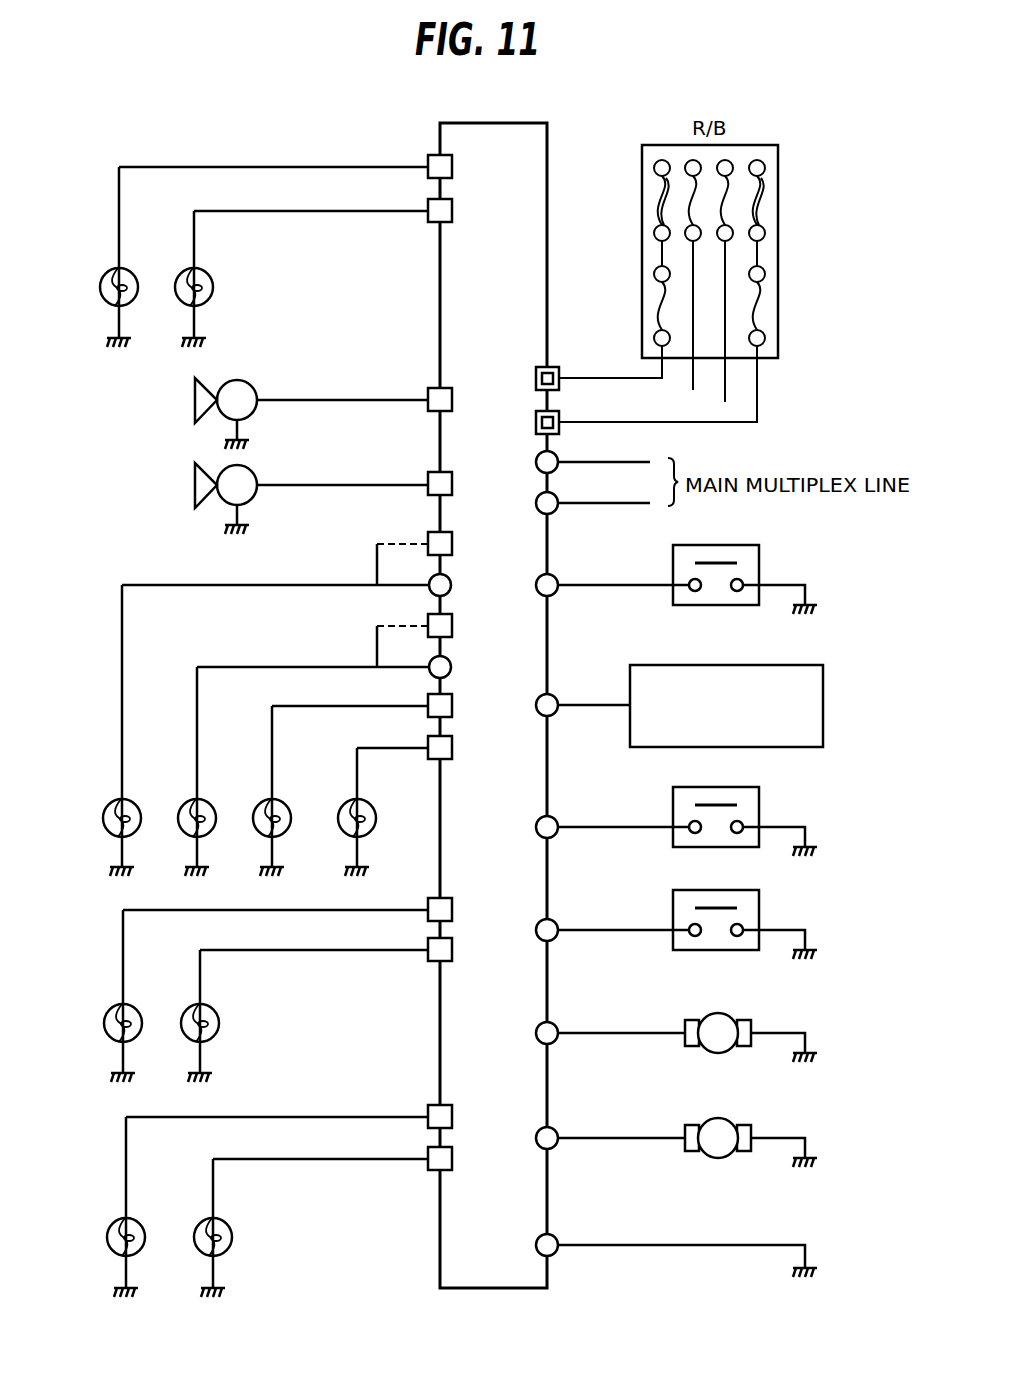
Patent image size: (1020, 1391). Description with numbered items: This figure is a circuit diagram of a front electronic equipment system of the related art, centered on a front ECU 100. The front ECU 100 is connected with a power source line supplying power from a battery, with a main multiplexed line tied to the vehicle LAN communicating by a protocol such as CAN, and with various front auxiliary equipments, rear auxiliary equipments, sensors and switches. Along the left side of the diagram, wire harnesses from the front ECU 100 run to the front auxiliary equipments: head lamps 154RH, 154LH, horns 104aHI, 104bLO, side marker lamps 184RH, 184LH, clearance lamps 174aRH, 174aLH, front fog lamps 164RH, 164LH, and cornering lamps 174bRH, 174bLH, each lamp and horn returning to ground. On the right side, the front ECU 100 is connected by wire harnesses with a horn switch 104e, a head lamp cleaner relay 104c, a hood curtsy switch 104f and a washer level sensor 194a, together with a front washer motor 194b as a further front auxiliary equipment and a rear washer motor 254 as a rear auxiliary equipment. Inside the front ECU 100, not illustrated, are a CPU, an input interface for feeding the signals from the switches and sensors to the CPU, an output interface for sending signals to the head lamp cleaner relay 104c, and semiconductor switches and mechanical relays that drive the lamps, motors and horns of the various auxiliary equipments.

The front ECU 100 is at (549, 143).
The head lamp 154LH is at (106, 274).
The head lamp 154RH is at (181, 274).
The horn 104aHI is at (191, 401).
The horn 104bLO is at (191, 486).
The side marker lamp 184LH is at (109, 805).
The side marker lamp 184RH is at (184, 805).
The clearance lamp 174aLH is at (259, 805).
The clearance lamp 174aRH is at (344, 805).
The front fog lamp 164LH is at (110, 1010).
The front fog lamp 164RH is at (187, 1010).
The cornering lamp 174bLH is at (113, 1224).
The cornering lamp 174bRH is at (200, 1224).
The horn switch 104e is at (759, 561).
The head lamp cleaner relay 104c is at (823, 705).
The hood curtsy switch 104f is at (760, 801).
The washer level sensor 194a is at (760, 904).
The front washer motor 194b is at (718, 1011).
The rear washer motor 254 is at (718, 1116).